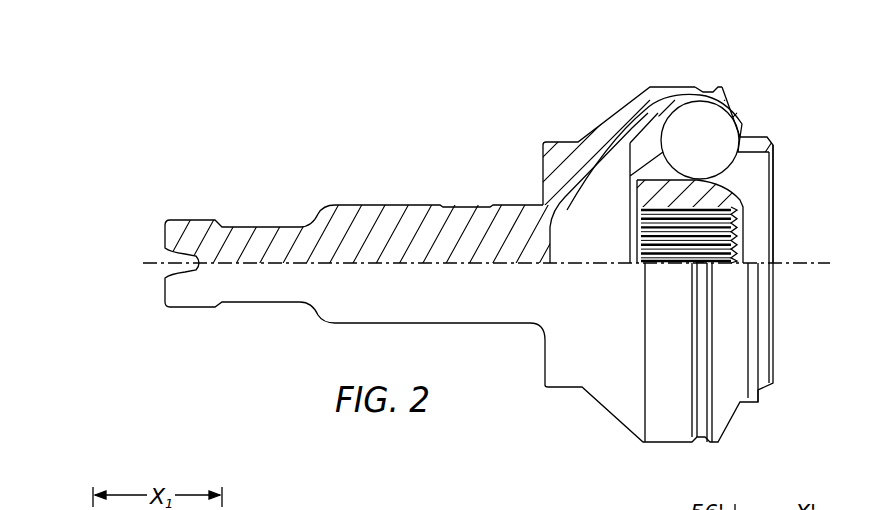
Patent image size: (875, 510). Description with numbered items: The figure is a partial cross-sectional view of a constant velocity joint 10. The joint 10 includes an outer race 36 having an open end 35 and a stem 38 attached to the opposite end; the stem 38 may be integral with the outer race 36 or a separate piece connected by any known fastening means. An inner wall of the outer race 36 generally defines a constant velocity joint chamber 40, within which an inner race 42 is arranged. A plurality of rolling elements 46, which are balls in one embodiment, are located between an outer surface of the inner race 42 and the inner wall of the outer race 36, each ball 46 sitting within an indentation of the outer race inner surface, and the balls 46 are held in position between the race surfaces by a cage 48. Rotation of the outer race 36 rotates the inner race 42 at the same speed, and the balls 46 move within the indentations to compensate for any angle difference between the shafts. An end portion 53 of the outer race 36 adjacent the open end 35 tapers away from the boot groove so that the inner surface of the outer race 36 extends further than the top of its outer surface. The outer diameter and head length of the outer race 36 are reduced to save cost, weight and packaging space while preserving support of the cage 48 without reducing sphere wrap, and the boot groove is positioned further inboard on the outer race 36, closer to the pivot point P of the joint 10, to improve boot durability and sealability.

The constant velocity joint 10 is at (545, 88).
The stem 38 is at (333, 215).
The constant velocity joint chamber 40 is at (603, 167).
The outer race 36 is at (660, 93).
The end portion 53 is at (728, 95).
The open end 35 is at (746, 98).
The rolling elements 46 is at (713, 126).
The cage 48 is at (752, 148).
The inner race 42 is at (723, 193).
The pivot point P is at (700, 263).